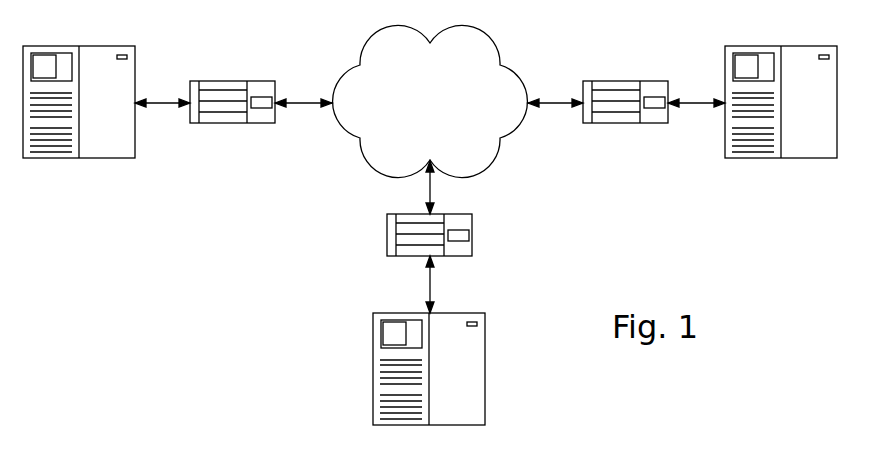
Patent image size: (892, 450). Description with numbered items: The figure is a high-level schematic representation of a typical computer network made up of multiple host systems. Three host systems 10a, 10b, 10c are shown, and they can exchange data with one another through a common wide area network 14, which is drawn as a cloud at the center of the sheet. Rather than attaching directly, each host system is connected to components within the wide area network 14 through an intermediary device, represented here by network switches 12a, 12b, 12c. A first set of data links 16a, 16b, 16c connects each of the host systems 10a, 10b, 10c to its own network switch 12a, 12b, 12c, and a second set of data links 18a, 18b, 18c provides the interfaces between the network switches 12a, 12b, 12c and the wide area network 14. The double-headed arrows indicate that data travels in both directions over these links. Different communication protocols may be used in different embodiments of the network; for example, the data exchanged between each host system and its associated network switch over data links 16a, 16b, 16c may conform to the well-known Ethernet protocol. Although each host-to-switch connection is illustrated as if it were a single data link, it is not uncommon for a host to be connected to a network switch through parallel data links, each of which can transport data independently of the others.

The host system 10a is at (80, 158).
The host system 10b is at (486, 367).
The host system 10c is at (780, 158).
The network switch 12a is at (233, 125).
The network switch 12b is at (473, 233).
The network switch 12c is at (627, 125).
The wide area network 14 is at (500, 65).
The data link 16a is at (163, 100).
The data link 16b is at (428, 285).
The data link 16c is at (697, 100).
The data link 18a is at (303, 100).
The data link 18b is at (428, 185).
The data link 18c is at (555, 100).